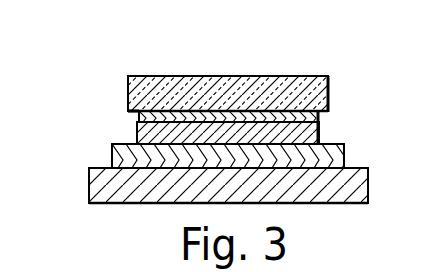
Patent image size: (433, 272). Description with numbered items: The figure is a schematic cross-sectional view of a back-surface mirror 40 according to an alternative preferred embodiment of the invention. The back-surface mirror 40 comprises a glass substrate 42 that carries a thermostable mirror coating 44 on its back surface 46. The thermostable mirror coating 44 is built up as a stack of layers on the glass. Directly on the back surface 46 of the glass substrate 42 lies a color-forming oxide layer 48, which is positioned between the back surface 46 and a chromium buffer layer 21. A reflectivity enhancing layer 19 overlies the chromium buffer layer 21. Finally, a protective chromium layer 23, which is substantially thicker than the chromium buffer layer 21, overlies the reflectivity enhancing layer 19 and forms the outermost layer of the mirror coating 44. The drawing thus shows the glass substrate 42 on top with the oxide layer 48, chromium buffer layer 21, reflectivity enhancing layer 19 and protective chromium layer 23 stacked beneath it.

The back-surface mirror 40 is at (117, 71).
The glass substrate 42 is at (328, 79).
The color-forming oxide layer 48 is at (319, 117).
The chromium buffer layer 21 is at (320, 133).
The reflectivity enhancing layer 19 is at (344, 160).
The protective chromium layer 23 is at (368, 178).
The thermostable mirror coating 44 is at (67, 119).
The back surface 46 is at (131, 113).